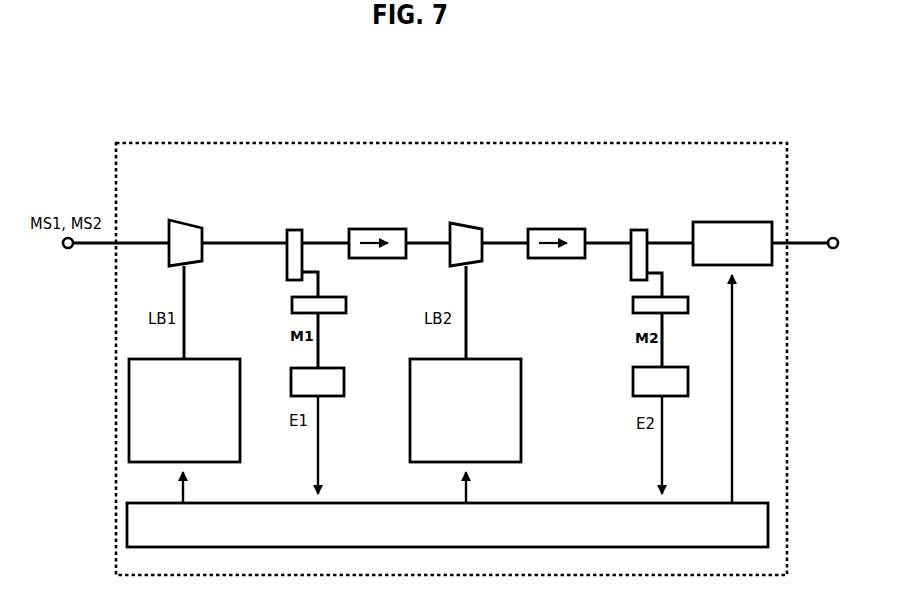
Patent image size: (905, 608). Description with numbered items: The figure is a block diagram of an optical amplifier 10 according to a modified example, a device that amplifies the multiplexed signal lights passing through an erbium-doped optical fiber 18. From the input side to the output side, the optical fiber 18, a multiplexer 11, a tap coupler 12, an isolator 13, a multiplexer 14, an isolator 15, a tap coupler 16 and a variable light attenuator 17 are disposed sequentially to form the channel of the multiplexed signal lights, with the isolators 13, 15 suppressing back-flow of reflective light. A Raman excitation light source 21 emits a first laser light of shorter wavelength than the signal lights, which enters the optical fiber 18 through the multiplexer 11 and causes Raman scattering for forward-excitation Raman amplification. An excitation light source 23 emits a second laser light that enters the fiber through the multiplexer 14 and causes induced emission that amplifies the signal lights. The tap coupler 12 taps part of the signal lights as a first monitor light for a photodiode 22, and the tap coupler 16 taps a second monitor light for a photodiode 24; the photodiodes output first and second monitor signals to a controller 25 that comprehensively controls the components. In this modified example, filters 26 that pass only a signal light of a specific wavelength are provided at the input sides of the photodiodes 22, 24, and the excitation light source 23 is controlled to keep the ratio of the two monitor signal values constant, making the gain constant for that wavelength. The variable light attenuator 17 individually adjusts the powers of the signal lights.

The optical amplifier 10 is at (690, 142).
The multiplexer 11 is at (184, 222).
The tap coupler 12 is at (294, 229).
The isolator 13 is at (376, 228).
The multiplexer 14 is at (467, 223).
The isolator 15 is at (555, 228).
The tap coupler 16 is at (638, 229).
The variable light attenuator 17 is at (732, 222).
The optical fiber 18 is at (243, 243).
The Raman excitation light source 21 is at (223, 359).
The photodiode 22 is at (337, 367).
The excitation light source 23 is at (503, 359).
The photodiode 24 is at (679, 367).
The controller 25 is at (750, 503).
The filter 26 is at (286, 306).